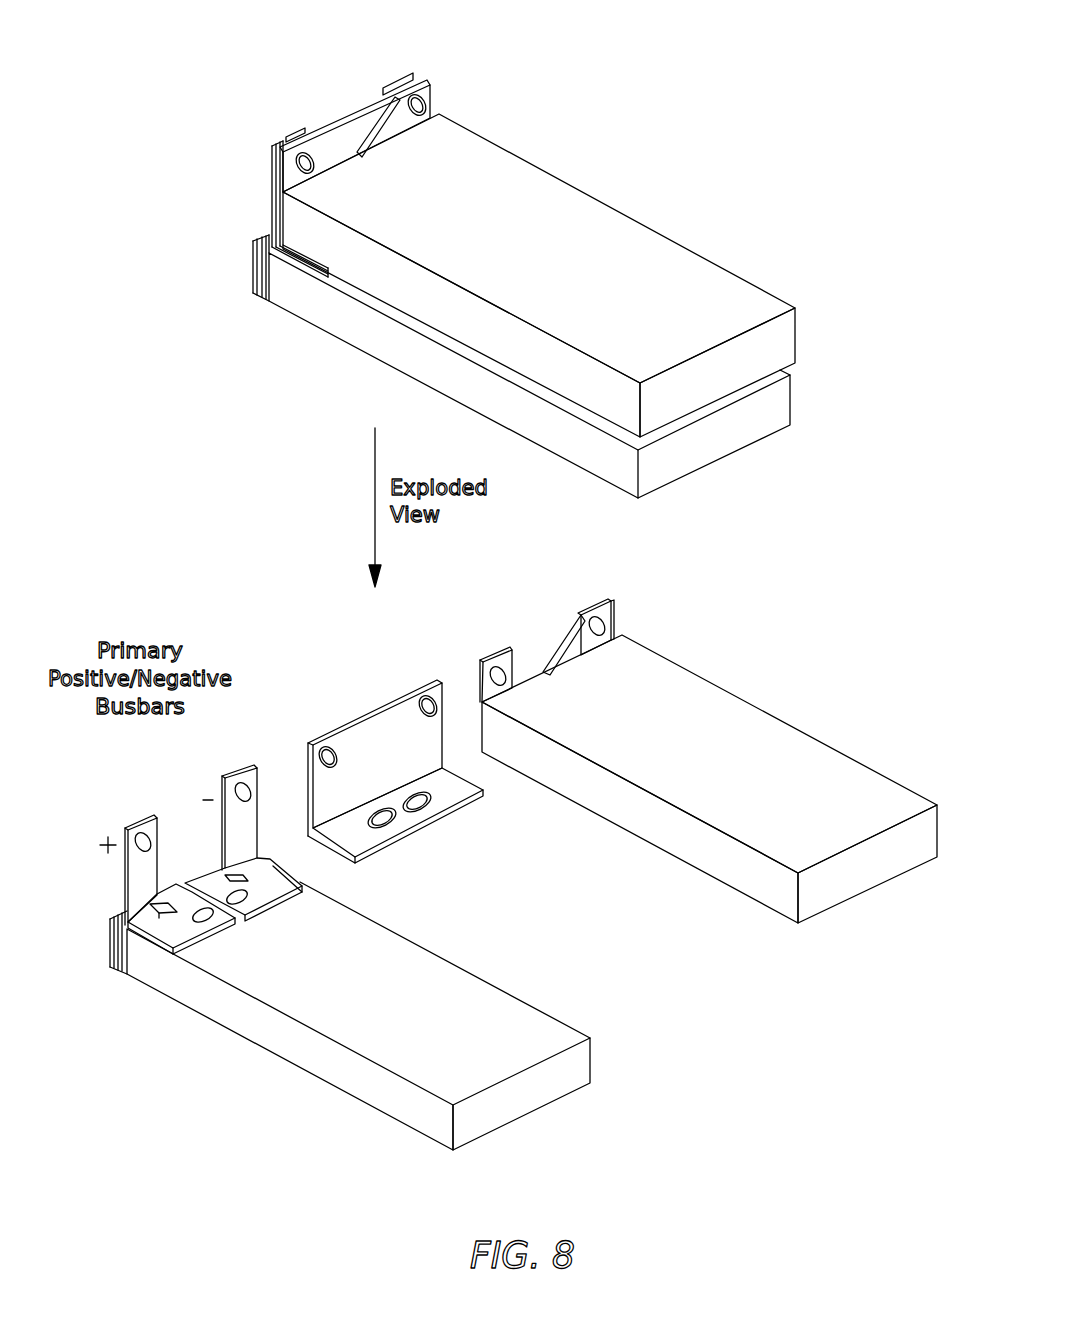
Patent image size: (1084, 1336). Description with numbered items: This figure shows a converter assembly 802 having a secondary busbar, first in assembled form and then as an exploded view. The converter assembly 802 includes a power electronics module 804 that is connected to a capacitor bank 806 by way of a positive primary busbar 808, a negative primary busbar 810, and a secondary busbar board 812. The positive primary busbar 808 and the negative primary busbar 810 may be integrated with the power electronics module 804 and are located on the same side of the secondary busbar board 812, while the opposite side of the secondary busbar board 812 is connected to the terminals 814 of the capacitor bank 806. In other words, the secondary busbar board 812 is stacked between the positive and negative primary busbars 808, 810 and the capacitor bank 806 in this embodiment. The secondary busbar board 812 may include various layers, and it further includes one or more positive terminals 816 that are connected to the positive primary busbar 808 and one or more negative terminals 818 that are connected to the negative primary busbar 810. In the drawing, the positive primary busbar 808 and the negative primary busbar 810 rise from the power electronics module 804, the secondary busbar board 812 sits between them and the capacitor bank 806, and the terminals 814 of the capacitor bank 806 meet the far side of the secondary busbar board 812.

The converter assembly 802 is at (641, 73).
The power electronics module 804 is at (320, 340).
The capacitor bank 806 is at (690, 272).
The positive primary busbar 808 is at (272, 160).
The negative primary busbar 810 is at (400, 77).
The secondary busbar board 812 is at (427, 477).
The terminals 814 is at (590, 612).
The positive terminals 816 is at (380, 808).
The negative terminals 818 is at (401, 793).